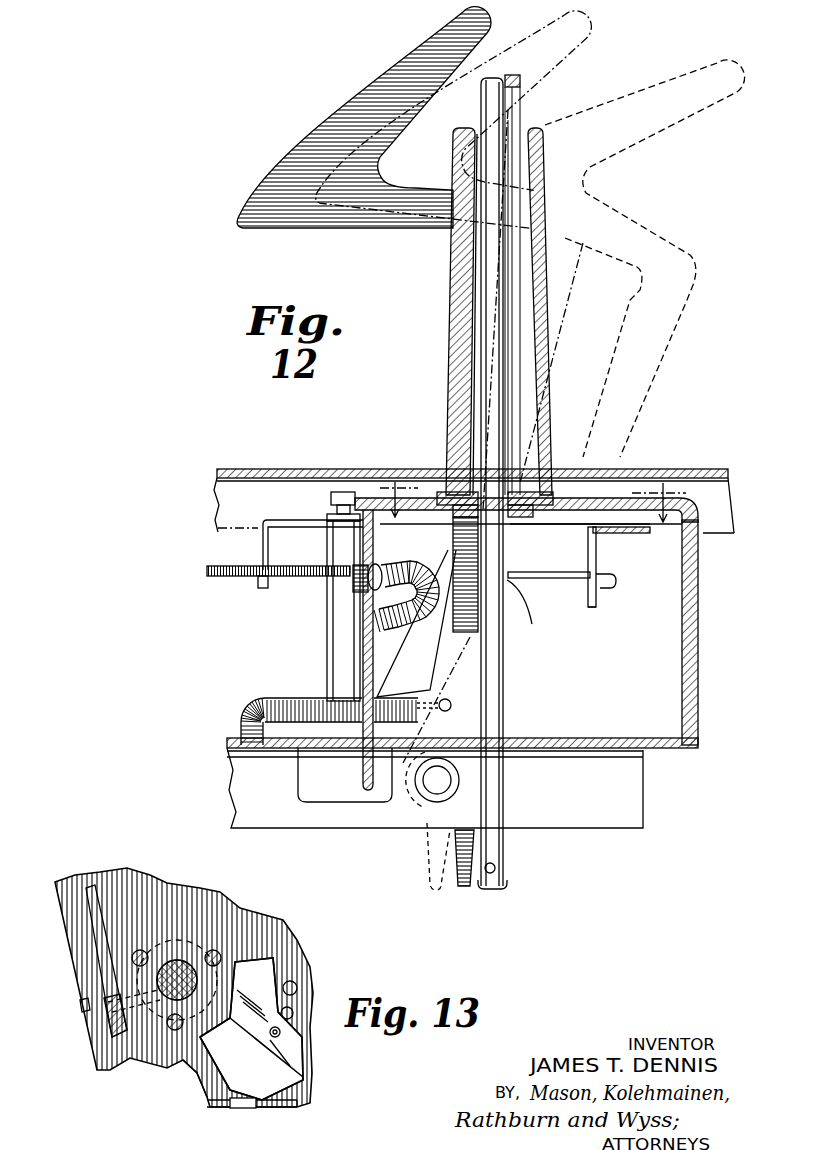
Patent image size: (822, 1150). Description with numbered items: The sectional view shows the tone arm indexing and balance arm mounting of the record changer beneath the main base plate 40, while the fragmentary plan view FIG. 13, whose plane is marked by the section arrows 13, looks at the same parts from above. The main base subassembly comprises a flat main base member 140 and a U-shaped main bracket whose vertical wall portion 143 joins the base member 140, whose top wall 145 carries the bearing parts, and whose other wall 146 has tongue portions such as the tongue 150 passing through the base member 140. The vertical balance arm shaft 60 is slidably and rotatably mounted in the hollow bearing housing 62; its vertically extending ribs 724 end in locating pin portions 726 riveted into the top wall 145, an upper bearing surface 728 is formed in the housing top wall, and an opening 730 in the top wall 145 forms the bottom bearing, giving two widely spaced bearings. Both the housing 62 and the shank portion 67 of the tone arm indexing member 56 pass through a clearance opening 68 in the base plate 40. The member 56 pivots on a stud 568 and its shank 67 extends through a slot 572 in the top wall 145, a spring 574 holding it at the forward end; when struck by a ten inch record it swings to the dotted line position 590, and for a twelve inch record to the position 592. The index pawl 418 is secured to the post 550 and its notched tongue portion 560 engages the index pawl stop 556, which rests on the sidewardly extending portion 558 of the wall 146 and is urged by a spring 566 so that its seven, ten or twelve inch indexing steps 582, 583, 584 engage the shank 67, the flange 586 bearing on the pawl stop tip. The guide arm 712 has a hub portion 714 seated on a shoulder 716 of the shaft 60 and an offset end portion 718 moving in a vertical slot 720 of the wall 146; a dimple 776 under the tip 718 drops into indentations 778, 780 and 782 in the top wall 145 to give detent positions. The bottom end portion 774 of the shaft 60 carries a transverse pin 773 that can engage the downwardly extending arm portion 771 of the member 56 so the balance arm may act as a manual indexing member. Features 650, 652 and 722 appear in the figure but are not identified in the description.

In FIG. 12, the tone arm indexing member 56 is at (367, 85).
In FIG. 12, the balance arm shaft 60 is at (492, 78).
In FIG. 13, the balance arm shaft 60 is at (160, 962).
In FIG. 12, the dotted line position 590 is at (590, 30).
In FIG. 12, the dotted line position 592 is at (698, 112).
In FIG. 12, the upper bearing surface 728 is at (518, 118).
In FIG. 12, the ribs 724 is at (456, 341).
In FIG. 12, the shank portion 67 is at (456, 371).
In FIG. 12, the bearing housing 62 is at (548, 322).
In FIG. 12, the opening 730 is at (556, 472).
In FIG. 12, the clearance opening 68 is at (548, 495).
In FIG. 12, the locating pin portions 726 is at (447, 490).
In FIG. 13, the locating pin portions 726 is at (172, 1031).
In FIG. 12, the shoulder 716 is at (505, 540).
In FIG. 12, the hub portion 714 is at (458, 540).
In FIG. 13, the hub portion 714 is at (168, 942).
In FIG. 12, the section line 13- 13 is at (533, 521).
In FIG. 12, the main base plate 40 is at (718, 470).
In FIG. 12, the top wall 145 is at (618, 497).
In FIG. 13, the top wall 145 is at (268, 924).
In FIG. 12, the vertical wall portion 143 is at (699, 648).
In FIG. 12, the main base member 140 is at (601, 738).
In FIG. 12, the tongue portion 150 is at (386, 802).
In FIG. 12, the pocket 650 is at (362, 769).
In FIG. 12, the vertical wall portion 146 is at (365, 658).
In FIG. 13, the vertical wall portion 146 is at (264, 1108).
In FIG. 12, the bolt 652 is at (352, 589).
In FIG. 12, the post 550 is at (335, 620).
In FIG. 12, the notched tongue portion 560 is at (262, 545).
In FIG. 12, the index pawl stop 556 is at (214, 578).
In FIG. 12, the spring 566 is at (440, 583).
In FIG. 12, the sidewardly extending portion 558 is at (396, 636).
In FIG. 12, the spring 574 is at (277, 712).
In FIG. 12, the index pawl 418 is at (621, 540).
In FIG. 12, the twelve inch indexing step 584 is at (617, 584).
In FIG. 12, the flange 586 is at (597, 607).
In FIG. 12, the ten inch indexing step 583 is at (570, 580).
In FIG. 12, the seven inch indexing step 582 is at (532, 626).
In FIG. 12, the stud 568 is at (428, 790).
In FIG. 12, the bottom end portion 774 is at (508, 851).
In FIG. 12, the transverse pin 773 is at (496, 871).
In FIG. 13, the transverse pin 773 is at (104, 1001).
In FIG. 12, the arm portion 771 is at (463, 889).
In FIG. 13, the slot 572 is at (90, 884).
In FIG. 13, the offset end portion 718 is at (300, 1082).
In FIG. 13, the guide arm 712 is at (236, 1040).
In FIG. 13, the slot 720 is at (236, 1108).
In FIG. 13, the notch 722 is at (196, 1074).
In FIG. 13, the indentation 782 is at (294, 982).
In FIG. 13, the indentation 780 is at (291, 1008).
In FIG. 13, the indentation 778 is at (281, 1032).
In FIG. 13, the dimple 776 is at (292, 1052).